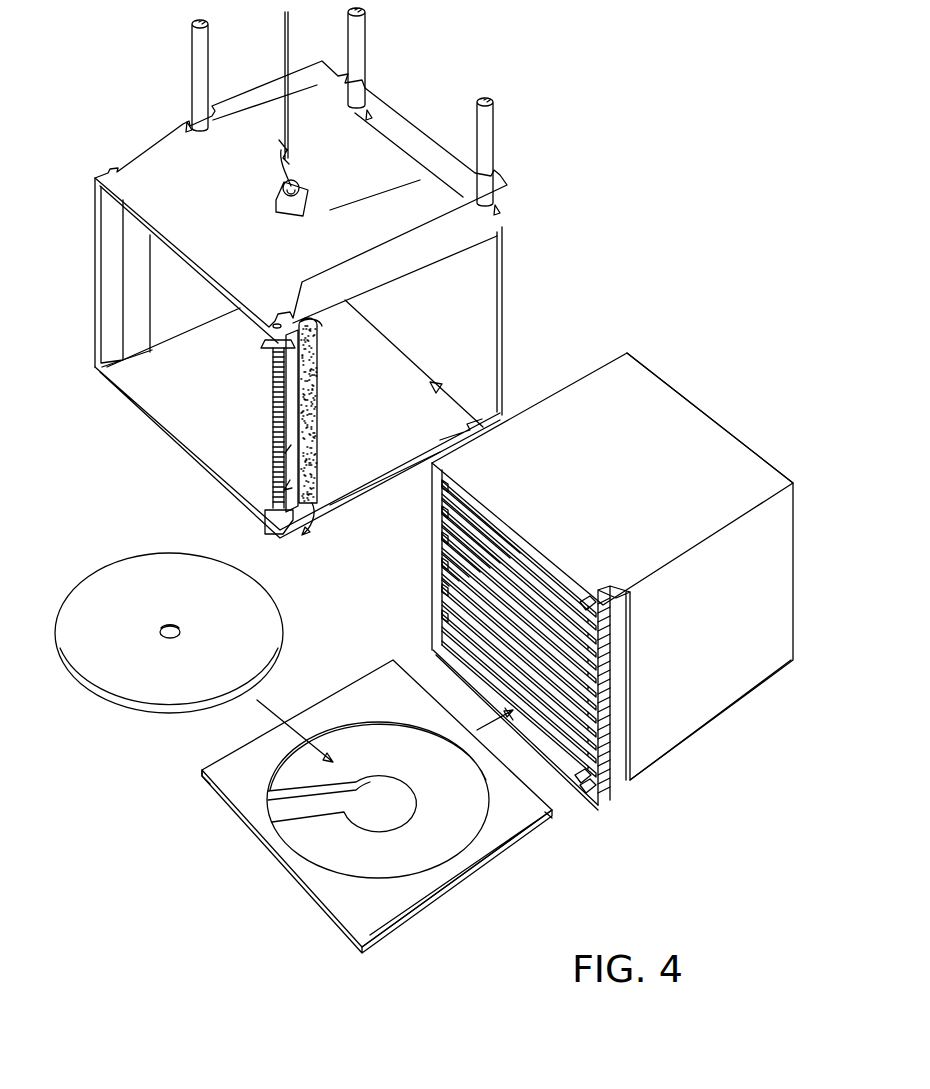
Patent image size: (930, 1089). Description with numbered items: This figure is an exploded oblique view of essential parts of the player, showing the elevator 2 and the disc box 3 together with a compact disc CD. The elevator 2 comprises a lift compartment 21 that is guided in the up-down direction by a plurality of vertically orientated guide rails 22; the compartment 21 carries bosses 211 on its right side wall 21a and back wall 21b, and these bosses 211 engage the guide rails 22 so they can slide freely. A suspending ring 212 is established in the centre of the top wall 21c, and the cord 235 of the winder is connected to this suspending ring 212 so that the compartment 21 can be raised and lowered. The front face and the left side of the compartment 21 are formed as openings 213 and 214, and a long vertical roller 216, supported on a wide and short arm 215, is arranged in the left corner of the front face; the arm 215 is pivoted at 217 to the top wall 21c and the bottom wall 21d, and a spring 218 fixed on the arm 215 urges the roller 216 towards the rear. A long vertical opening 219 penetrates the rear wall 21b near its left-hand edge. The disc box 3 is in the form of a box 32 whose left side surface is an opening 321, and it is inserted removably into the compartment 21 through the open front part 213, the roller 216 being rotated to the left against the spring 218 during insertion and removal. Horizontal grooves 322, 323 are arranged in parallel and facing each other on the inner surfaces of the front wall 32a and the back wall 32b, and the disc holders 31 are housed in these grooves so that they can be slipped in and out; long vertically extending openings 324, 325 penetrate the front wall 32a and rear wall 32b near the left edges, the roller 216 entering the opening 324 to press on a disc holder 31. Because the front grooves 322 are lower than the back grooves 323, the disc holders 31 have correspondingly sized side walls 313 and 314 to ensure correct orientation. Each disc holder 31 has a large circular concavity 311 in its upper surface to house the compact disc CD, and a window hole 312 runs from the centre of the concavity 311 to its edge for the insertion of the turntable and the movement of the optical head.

The elevator 2 is at (155, 176).
The lift compartment 21 is at (224, 220).
The right side wall 21a is at (411, 152).
The back wall 21b is at (245, 113).
The top wall 21c is at (360, 220).
The bottom wall 21d is at (334, 506).
The guide rails 22 is at (209, 50).
The bosses 211 is at (187, 120).
The suspending ring 212 is at (298, 195).
The front opening 213 is at (371, 466).
The left side opening 214 is at (208, 440).
The arm 215 is at (298, 430).
The roller 216 is at (318, 385).
The pivot 217 is at (278, 320).
The spring 218 is at (272, 400).
The long vertical opening 219 is at (128, 322).
The cord 235 is at (290, 50).
The disc box 3 is at (668, 418).
The disc holders 31 is at (445, 633).
The box 32 is at (742, 465).
The front wall 32a is at (728, 690).
The back wall 32b is at (440, 589).
The circular concavity 311 is at (378, 735).
The window hole 312 is at (385, 790).
The side wall 313 is at (374, 944).
The side wall 314 is at (200, 782).
The opening 321 is at (582, 789).
The horizontal grooves 322 is at (581, 793).
The horizontal grooves 323 is at (462, 514).
The vertical opening 324 is at (612, 666).
The vertical opening 325 is at (444, 517).
The compact disc CD is at (91, 584).